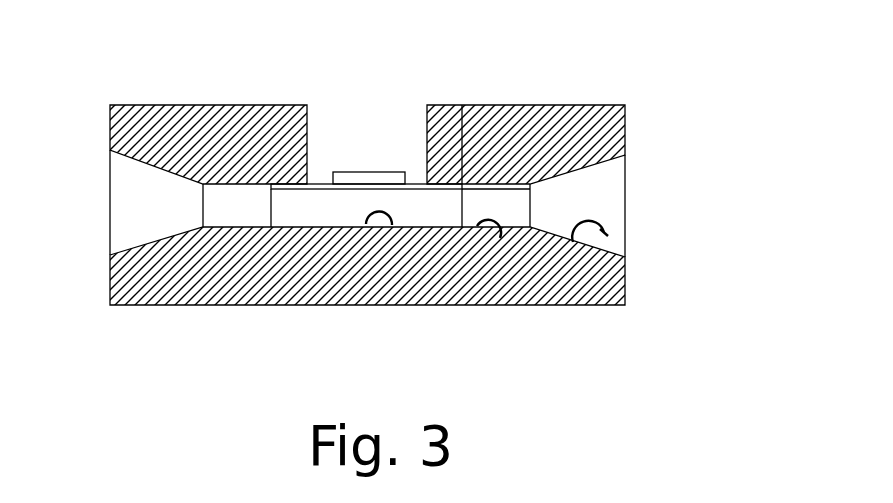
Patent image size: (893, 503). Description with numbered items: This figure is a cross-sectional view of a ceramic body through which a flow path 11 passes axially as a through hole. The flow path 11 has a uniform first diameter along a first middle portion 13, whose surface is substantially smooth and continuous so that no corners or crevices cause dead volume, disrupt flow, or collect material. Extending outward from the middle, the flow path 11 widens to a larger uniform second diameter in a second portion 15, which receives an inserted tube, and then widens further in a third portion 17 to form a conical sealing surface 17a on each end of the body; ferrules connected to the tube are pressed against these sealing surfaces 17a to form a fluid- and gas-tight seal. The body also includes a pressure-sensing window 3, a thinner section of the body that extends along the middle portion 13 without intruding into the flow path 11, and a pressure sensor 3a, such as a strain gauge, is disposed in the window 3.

The pressure-sensing window 3 is at (411, 172).
The pressure sensor 3a is at (368, 170).
The flow path 11 is at (632, 190).
The first middle portion 13 is at (367, 222).
The second portion 15 is at (500, 238).
The third portion 17 is at (600, 197).
The sealing surface 17a is at (604, 232).